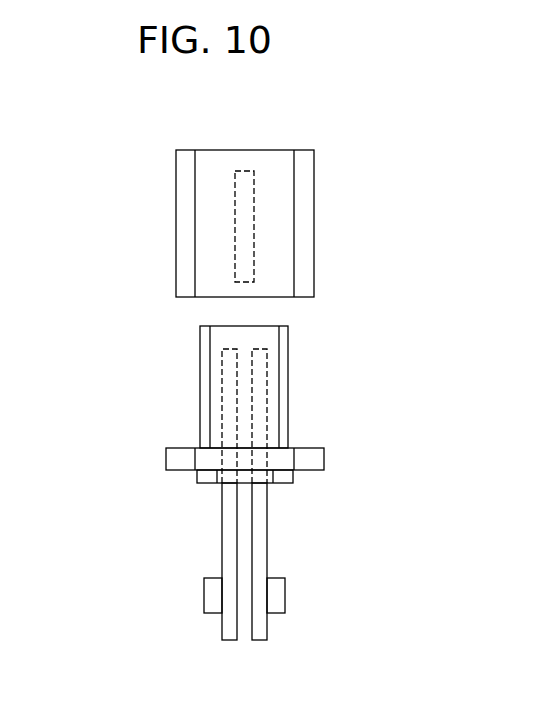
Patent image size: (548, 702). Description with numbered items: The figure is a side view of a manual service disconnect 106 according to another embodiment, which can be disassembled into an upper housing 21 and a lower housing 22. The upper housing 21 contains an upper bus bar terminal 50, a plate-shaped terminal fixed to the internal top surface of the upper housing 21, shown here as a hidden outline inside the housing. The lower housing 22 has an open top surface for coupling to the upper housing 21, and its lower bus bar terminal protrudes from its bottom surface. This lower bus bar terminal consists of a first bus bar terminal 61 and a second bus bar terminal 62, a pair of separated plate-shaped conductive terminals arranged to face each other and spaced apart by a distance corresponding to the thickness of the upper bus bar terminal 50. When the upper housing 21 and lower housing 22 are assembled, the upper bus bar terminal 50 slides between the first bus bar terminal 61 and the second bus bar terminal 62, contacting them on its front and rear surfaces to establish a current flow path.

The manual service disconnect 106 is at (159, 131).
The upper housing 21 is at (314, 170).
The upper bus bar terminal 50 is at (250, 243).
The lower housing 22 is at (287, 345).
The first bus bar terminal 61 is at (223, 403).
The second bus bar terminal 62 is at (267, 403).